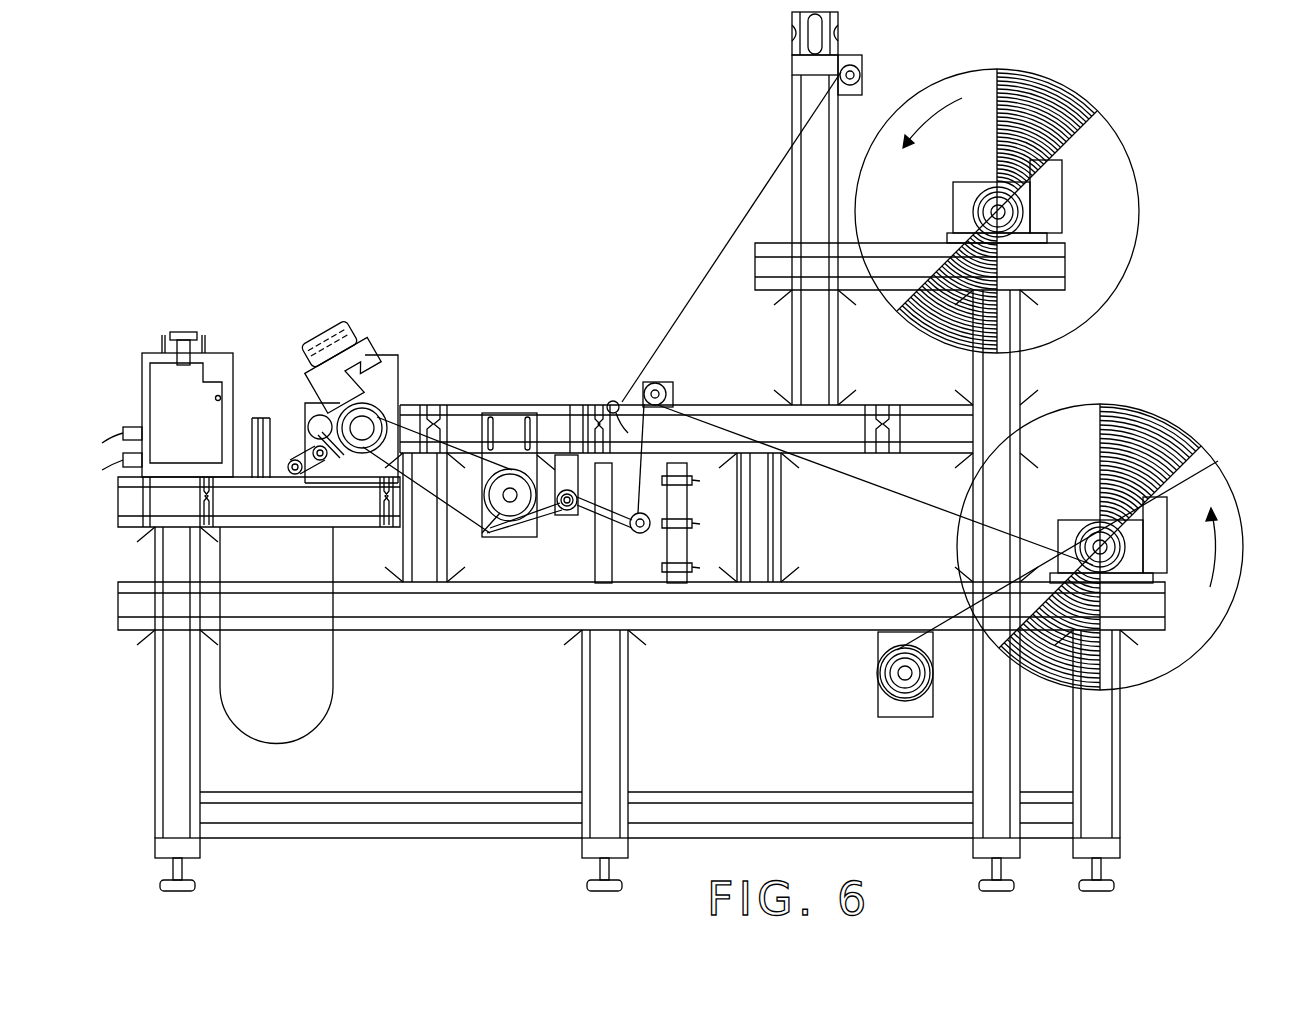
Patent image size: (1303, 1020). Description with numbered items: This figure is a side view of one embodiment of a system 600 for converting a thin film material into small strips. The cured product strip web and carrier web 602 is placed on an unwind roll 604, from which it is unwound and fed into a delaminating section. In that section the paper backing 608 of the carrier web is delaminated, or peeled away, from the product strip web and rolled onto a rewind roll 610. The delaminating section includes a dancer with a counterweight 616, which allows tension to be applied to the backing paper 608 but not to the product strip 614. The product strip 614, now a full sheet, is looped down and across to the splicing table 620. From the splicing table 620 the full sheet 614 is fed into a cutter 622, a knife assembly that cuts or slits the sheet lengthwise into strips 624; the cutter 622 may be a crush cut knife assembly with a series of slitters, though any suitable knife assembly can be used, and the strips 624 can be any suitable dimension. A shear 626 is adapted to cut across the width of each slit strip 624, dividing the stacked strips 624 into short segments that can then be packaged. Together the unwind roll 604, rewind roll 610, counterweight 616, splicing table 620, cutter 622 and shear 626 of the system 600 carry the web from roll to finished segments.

The system 600 is at (549, 222).
The product strip web and carrier web 602 is at (1112, 130).
The unwind roll 604 is at (1062, 207).
The paper backing 608 is at (867, 493).
The rewind roll 610 is at (1147, 573).
The product strip 614 is at (650, 383).
The counterweight 616 is at (642, 533).
The splicing table 620 is at (467, 403).
The cutter 622 is at (312, 313).
The strips 624 is at (333, 697).
The shear 626 is at (180, 330).